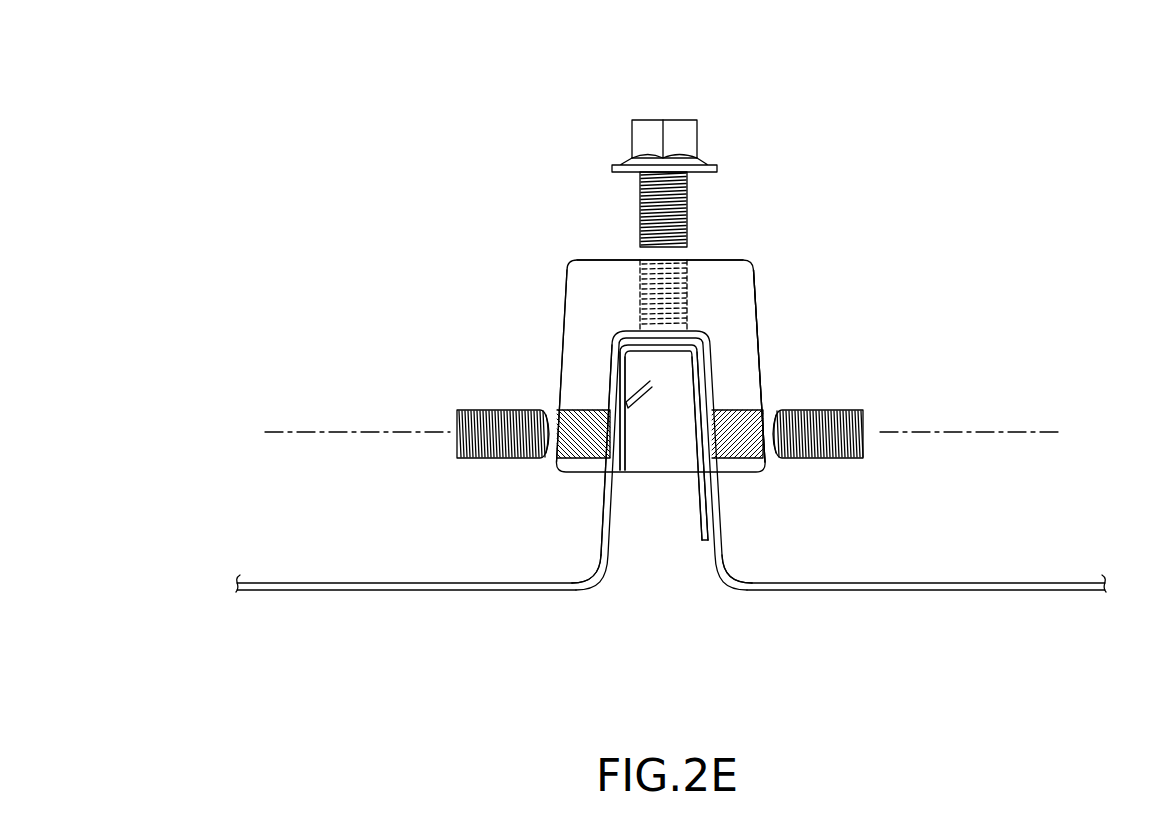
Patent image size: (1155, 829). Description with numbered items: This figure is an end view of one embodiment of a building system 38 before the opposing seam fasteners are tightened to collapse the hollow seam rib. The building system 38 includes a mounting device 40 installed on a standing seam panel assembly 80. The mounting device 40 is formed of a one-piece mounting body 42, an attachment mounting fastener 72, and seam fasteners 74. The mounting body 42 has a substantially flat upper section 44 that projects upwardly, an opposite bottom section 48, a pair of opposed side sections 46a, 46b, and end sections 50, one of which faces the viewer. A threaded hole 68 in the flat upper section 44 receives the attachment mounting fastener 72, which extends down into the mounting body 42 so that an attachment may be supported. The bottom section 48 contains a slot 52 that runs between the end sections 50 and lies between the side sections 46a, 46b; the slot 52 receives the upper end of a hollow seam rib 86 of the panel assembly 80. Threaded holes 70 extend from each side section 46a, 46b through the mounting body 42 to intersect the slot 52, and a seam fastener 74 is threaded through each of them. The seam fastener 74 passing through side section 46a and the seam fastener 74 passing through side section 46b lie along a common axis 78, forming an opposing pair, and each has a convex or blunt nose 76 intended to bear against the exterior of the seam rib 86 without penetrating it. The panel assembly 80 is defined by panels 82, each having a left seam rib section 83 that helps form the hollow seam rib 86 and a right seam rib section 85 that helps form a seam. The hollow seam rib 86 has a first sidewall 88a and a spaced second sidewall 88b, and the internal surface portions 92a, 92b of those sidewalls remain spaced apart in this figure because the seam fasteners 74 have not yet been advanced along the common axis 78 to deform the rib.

The building system 38 is at (302, 209).
The mounting device 40 is at (812, 200).
The mounting body 42 is at (753, 263).
The upper section 44 is at (600, 259).
The side section 46a is at (565, 318).
The side section 46b is at (757, 328).
The bottom section 48 is at (575, 495).
The end section 50 is at (735, 294).
The slot 52 is at (657, 571).
The threaded hole 68 is at (692, 288).
The threaded hole 70 is at (590, 410).
The attachment mounting fastener 72 is at (663, 120).
The seam fastener 74 is at (492, 410).
The nose 76 is at (548, 455).
The common axis 78 is at (970, 432).
The standing seam panel assembly 80 is at (1055, 505).
The panel 82 is at (286, 583).
The left seam rib section 83 is at (724, 532).
The right seam rib section 85 is at (597, 538).
The hollow seam rib 86 is at (652, 352).
The first sidewall 88a is at (616, 515).
The second sidewall 88b is at (733, 572).
The portion of internal surface 92a is at (621, 430).
The portion of internal surface 92b is at (681, 445).